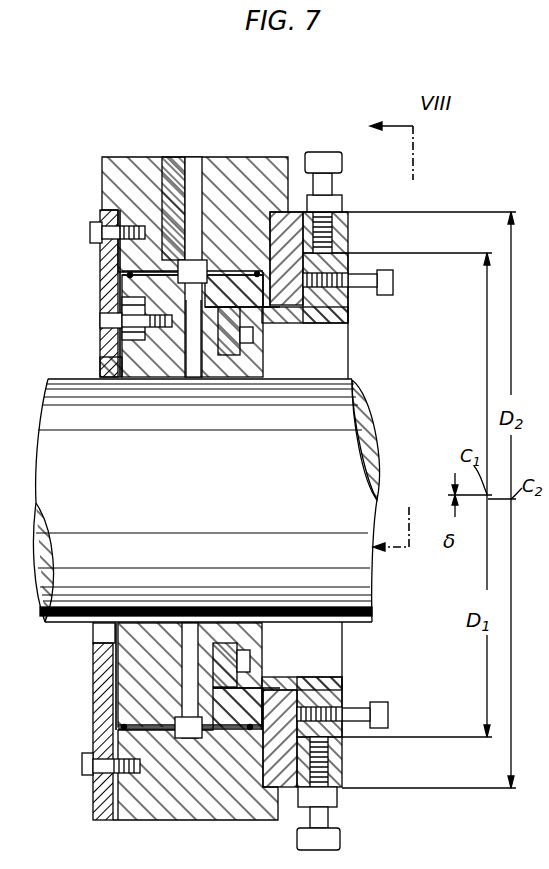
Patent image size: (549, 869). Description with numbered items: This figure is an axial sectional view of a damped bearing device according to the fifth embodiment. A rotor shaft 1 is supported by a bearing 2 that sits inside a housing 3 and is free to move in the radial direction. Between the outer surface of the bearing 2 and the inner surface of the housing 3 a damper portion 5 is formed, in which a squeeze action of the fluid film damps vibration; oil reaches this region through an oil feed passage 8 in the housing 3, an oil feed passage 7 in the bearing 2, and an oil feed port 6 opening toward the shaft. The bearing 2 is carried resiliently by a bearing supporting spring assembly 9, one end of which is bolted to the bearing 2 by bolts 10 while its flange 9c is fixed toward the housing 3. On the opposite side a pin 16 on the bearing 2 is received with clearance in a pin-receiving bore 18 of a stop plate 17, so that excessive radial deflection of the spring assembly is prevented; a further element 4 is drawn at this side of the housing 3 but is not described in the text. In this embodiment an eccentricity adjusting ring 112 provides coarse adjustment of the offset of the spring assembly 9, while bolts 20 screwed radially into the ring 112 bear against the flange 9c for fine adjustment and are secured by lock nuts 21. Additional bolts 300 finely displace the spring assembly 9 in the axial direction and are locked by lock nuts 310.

The rotor shaft 1 is at (47, 413).
The bearing 2 is at (162, 362).
The housing 3 is at (262, 170).
The bolt 4 is at (100, 253).
The damper portion 5 is at (162, 158).
The oil feed port 6 is at (188, 362).
The oil feed passage 7 is at (100, 362).
The oil feed passage 8 is at (197, 157).
The bearing supporting spring assembly 9 is at (336, 325).
The flange 9c is at (336, 310).
The bolts 10 is at (252, 341).
The pin 16 is at (100, 320).
The stop plate 17 is at (108, 268).
The pin-receiving bore 18 is at (122, 316).
The bolts 20 is at (322, 152).
The lock nut 21 is at (342, 208).
The eccentricity adjusting ring 112 is at (348, 229).
The bolts 300 is at (393, 280).
The lock nuts 310 is at (355, 290).